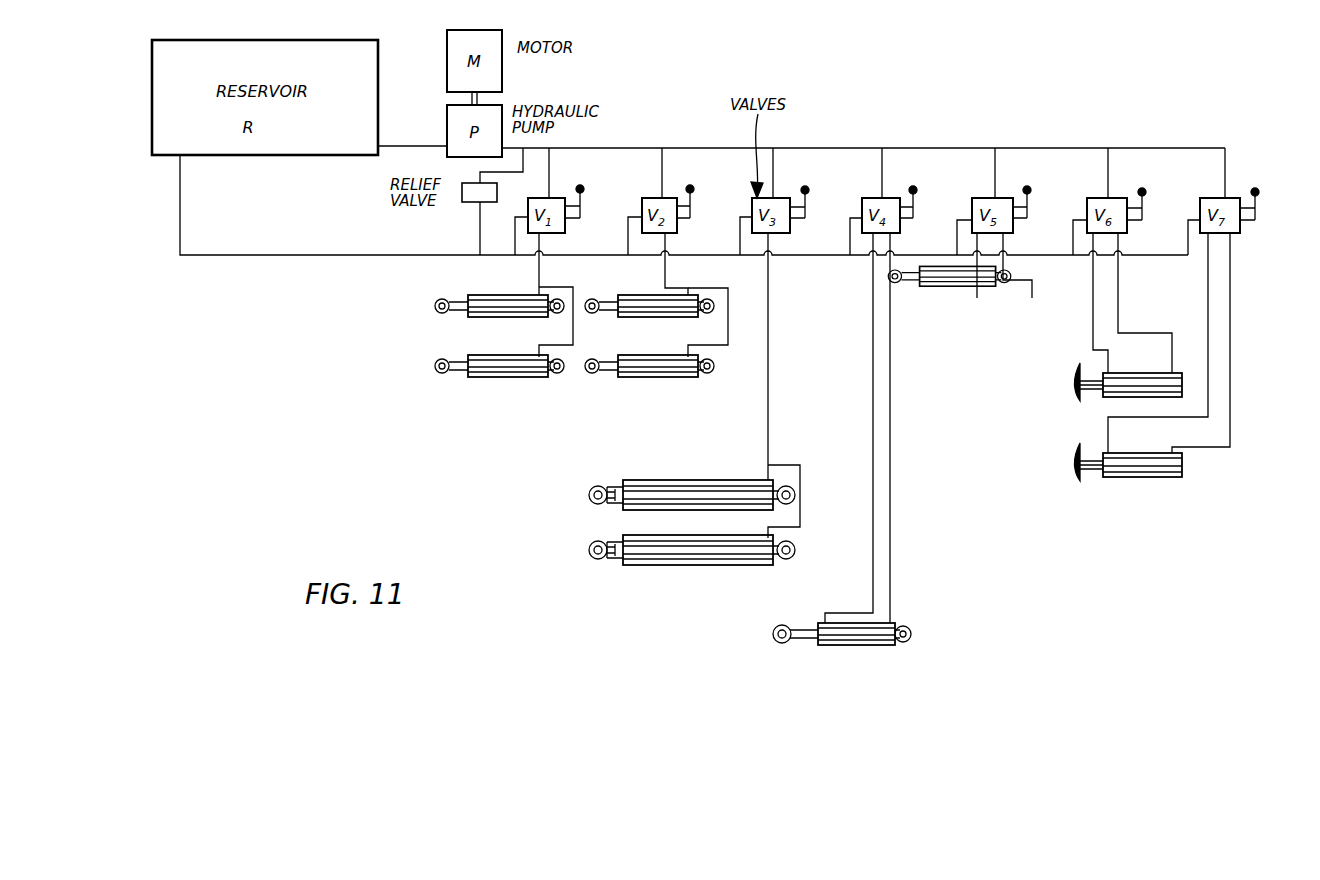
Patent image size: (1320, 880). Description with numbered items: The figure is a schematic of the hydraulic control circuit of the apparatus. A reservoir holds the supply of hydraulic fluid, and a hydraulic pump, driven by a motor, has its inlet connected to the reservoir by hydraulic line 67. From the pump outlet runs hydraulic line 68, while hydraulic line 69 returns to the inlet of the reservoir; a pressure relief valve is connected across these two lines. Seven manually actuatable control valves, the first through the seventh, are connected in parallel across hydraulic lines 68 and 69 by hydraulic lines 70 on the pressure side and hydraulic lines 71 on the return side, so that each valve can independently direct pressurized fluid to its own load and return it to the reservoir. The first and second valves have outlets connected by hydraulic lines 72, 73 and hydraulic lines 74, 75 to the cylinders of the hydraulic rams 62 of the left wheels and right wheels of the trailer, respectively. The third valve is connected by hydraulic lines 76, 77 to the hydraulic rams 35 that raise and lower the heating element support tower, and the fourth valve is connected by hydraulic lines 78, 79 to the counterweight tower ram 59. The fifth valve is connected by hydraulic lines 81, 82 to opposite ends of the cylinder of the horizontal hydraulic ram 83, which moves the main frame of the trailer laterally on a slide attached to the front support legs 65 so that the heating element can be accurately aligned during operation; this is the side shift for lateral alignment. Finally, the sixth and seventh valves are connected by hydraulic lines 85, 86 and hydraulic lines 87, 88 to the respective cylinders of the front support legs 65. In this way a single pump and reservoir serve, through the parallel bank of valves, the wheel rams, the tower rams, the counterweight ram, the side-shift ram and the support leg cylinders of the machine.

The hydraulic rams 35 is at (712, 493).
The counterweight tower ram 59 is at (880, 634).
The hydraulic rams 62 is at (497, 303).
The front support legs 65 is at (1138, 379).
The hydraulic line 67 is at (410, 146).
The hydraulic line 68 is at (652, 148).
The hydraulic line 69 is at (378, 270).
The hydraulic lines 70 is at (551, 180).
The hydraulic lines 71 is at (480, 244).
The hydraulic line 72 is at (538, 283).
The hydraulic line 73 is at (574, 292).
The hydraulic line 74 is at (668, 285).
The hydraulic line 75 is at (700, 290).
The hydraulic line 76 is at (770, 362).
The hydraulic line 77 is at (802, 501).
The hydraulic line 78 is at (873, 446).
The hydraulic line 79 is at (890, 446).
The hydraulic line 81 is at (977, 277).
The hydraulic line 82 is at (1003, 279).
The horizontal hydraulic ram 83 is at (1035, 320).
The hydraulic line 85 is at (1093, 310).
The hydraulic line 86 is at (1118, 310).
The hydraulic line 87 is at (1208, 310).
The hydraulic line 88 is at (1230, 311).